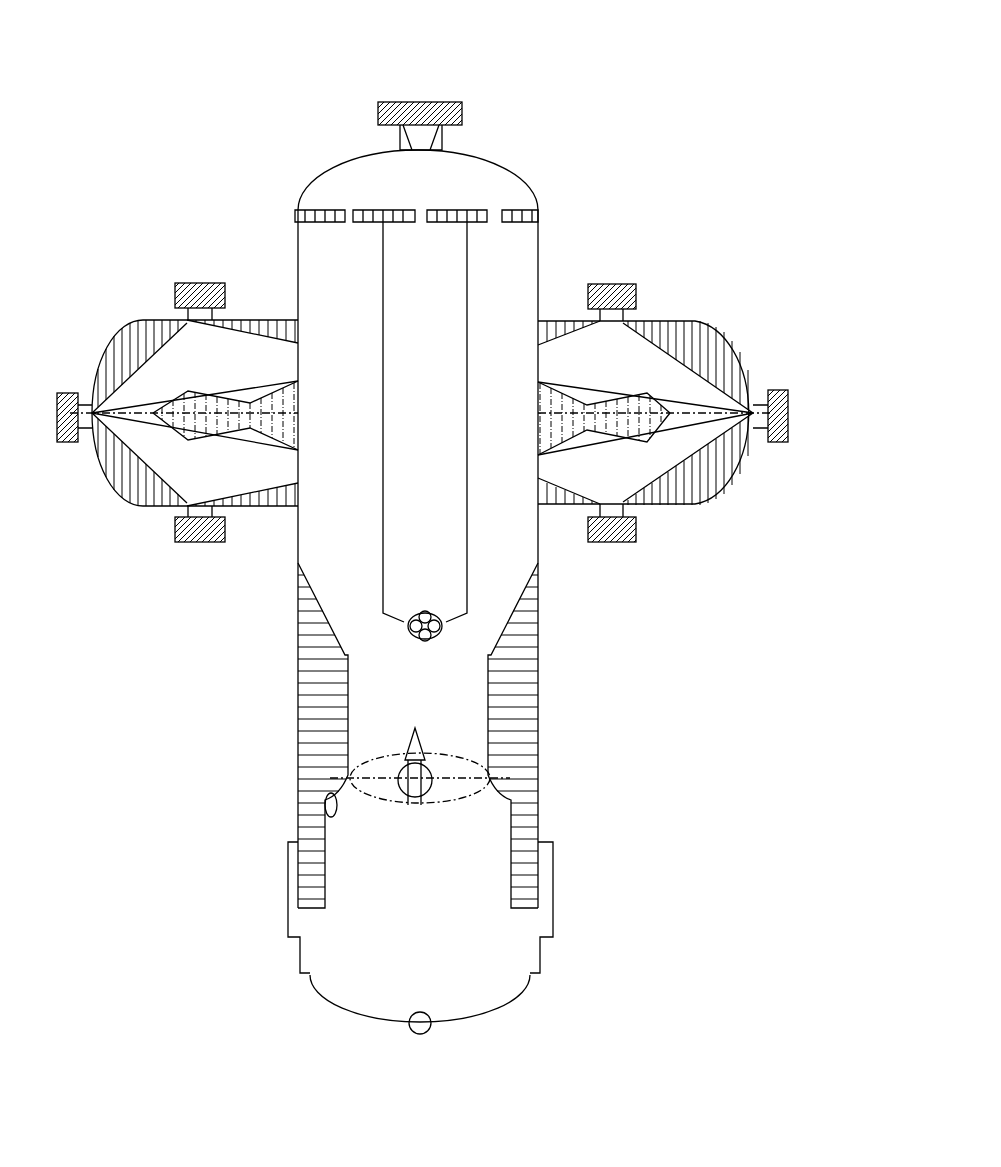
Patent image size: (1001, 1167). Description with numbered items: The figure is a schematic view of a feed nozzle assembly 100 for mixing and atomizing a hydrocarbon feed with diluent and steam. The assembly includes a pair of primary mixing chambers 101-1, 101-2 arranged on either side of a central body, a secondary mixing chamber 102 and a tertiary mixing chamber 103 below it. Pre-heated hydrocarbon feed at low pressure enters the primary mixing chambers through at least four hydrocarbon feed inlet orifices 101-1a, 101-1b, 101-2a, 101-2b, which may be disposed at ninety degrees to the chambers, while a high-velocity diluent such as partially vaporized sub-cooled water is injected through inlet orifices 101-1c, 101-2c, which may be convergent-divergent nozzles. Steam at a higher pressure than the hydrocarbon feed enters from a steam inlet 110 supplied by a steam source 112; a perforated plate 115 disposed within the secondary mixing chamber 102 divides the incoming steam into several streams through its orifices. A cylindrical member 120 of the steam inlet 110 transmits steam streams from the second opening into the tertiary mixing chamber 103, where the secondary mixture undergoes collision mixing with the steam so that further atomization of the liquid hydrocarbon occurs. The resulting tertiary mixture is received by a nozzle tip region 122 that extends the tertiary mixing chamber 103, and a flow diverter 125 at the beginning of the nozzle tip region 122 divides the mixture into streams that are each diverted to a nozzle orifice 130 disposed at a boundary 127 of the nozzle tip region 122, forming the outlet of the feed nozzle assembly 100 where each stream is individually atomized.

The feed nozzle assembly 100 is at (60, 31).
The primary mixing chamber 101-1 is at (110, 357).
The hydrocarbon feed inlet orifice 101-1a is at (180, 287).
The hydrocarbon feed inlet orifice 101-1b is at (202, 542).
The diluent inlet orifice 101-1c is at (57, 395).
The primary mixing chamber 101-2 is at (732, 352).
The hydrocarbon feed inlet orifice 101-2a is at (636, 288).
The hydrocarbon feed inlet orifice 101-2b is at (633, 532).
The diluent inlet orifice 101-2c is at (787, 417).
The secondary mixing chamber 102 is at (320, 268).
The tertiary mixing chamber 103 is at (425, 690).
The steam inlet 110 is at (372, 120).
The steam source 112 is at (460, 104).
The perforated plate 115 is at (388, 213).
The cylindrical member 120 is at (467, 297).
The nozzle tip region 122 is at (493, 943).
The flow diverter 125 is at (418, 747).
The boundary 127 is at (330, 1000).
The nozzle orifice 130 is at (431, 1023).